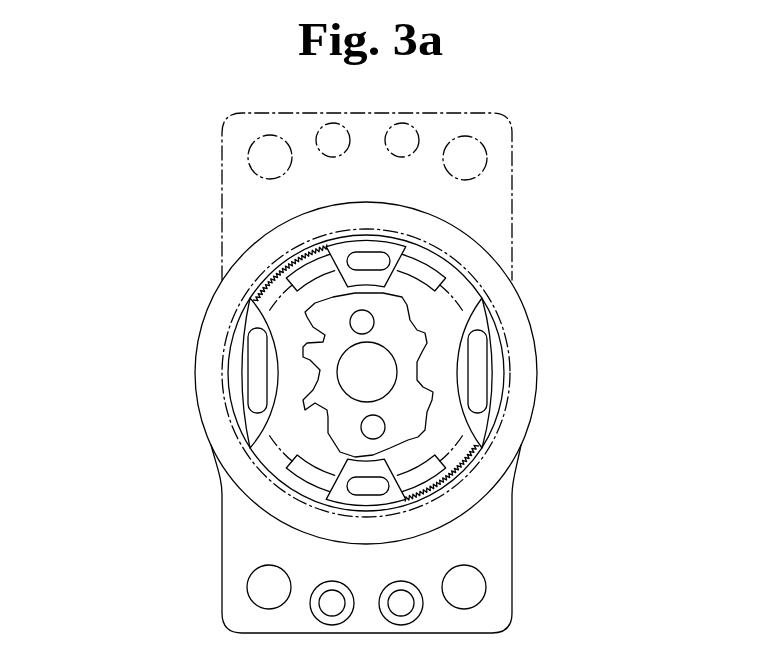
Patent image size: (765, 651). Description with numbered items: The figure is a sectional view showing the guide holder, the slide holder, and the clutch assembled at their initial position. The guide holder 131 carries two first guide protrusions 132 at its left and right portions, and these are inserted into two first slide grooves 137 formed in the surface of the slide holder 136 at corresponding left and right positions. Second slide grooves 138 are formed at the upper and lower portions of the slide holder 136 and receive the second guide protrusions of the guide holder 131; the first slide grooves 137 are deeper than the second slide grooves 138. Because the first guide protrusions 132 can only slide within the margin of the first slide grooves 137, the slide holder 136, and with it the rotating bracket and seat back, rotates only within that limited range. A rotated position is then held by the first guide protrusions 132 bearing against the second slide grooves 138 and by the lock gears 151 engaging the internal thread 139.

The guide holder 131 is at (495, 539).
The first guide protrusions 132 is at (483, 372).
The slide holder 136 is at (495, 195).
The first slide grooves 137 is at (480, 318).
The second slide grooves 138 is at (478, 242).
The internal thread 139 is at (233, 316).
The lock gears 151 is at (290, 383).